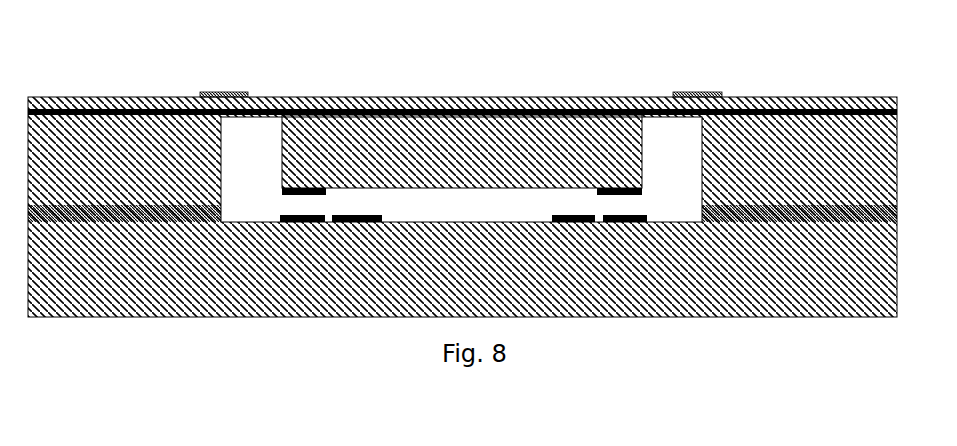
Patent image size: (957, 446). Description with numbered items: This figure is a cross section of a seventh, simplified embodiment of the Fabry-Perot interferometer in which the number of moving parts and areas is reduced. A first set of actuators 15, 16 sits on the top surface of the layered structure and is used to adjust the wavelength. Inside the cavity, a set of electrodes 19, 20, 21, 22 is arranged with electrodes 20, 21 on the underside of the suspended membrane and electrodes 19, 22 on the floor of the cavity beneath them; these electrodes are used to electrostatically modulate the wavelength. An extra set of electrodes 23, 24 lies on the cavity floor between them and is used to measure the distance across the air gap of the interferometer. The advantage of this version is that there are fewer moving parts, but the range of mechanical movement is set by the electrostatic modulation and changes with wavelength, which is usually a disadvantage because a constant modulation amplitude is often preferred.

The actuator 15 is at (240, 82).
The actuator 16 is at (685, 80).
The electrode 19 is at (272, 217).
The electrode 20 is at (272, 190).
The electrode 21 is at (645, 190).
The electrode 22 is at (642, 209).
The electrode 23 is at (368, 211).
The electrode 24 is at (555, 212).